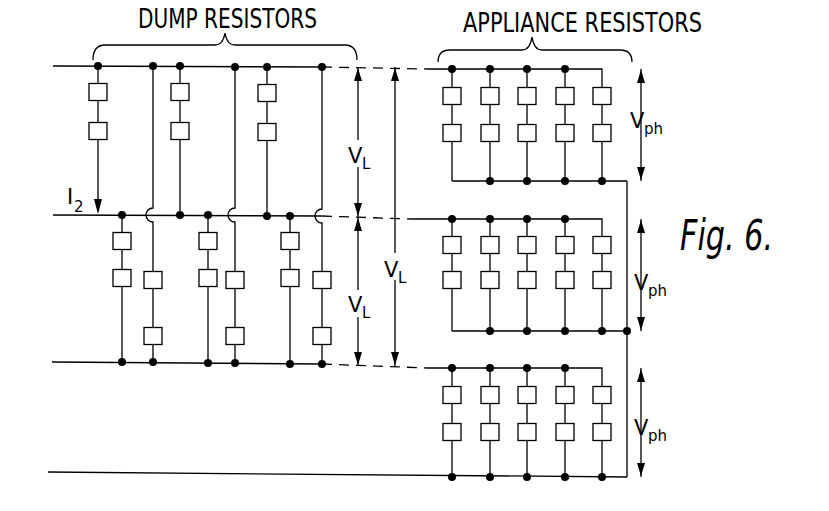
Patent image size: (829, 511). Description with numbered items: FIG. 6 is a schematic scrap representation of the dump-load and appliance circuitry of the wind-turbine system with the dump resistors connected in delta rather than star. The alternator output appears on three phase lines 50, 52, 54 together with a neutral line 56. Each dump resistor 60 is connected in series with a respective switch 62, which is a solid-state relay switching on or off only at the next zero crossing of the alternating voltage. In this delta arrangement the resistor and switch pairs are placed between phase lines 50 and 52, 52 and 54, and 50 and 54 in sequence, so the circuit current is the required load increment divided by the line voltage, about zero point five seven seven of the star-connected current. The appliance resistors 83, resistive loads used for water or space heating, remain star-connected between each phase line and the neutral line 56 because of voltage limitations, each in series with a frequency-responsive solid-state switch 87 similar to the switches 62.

The phase line 50 is at (60, 65).
The phase line 52 is at (55, 214).
The phase line 54 is at (56, 362).
The neutral line 56 is at (75, 472).
The dump resistor 60 is at (107, 132).
The switch 62 is at (107, 93).
The appliance resistor 83 is at (458, 142).
The solid-state switch 87 is at (443, 97).